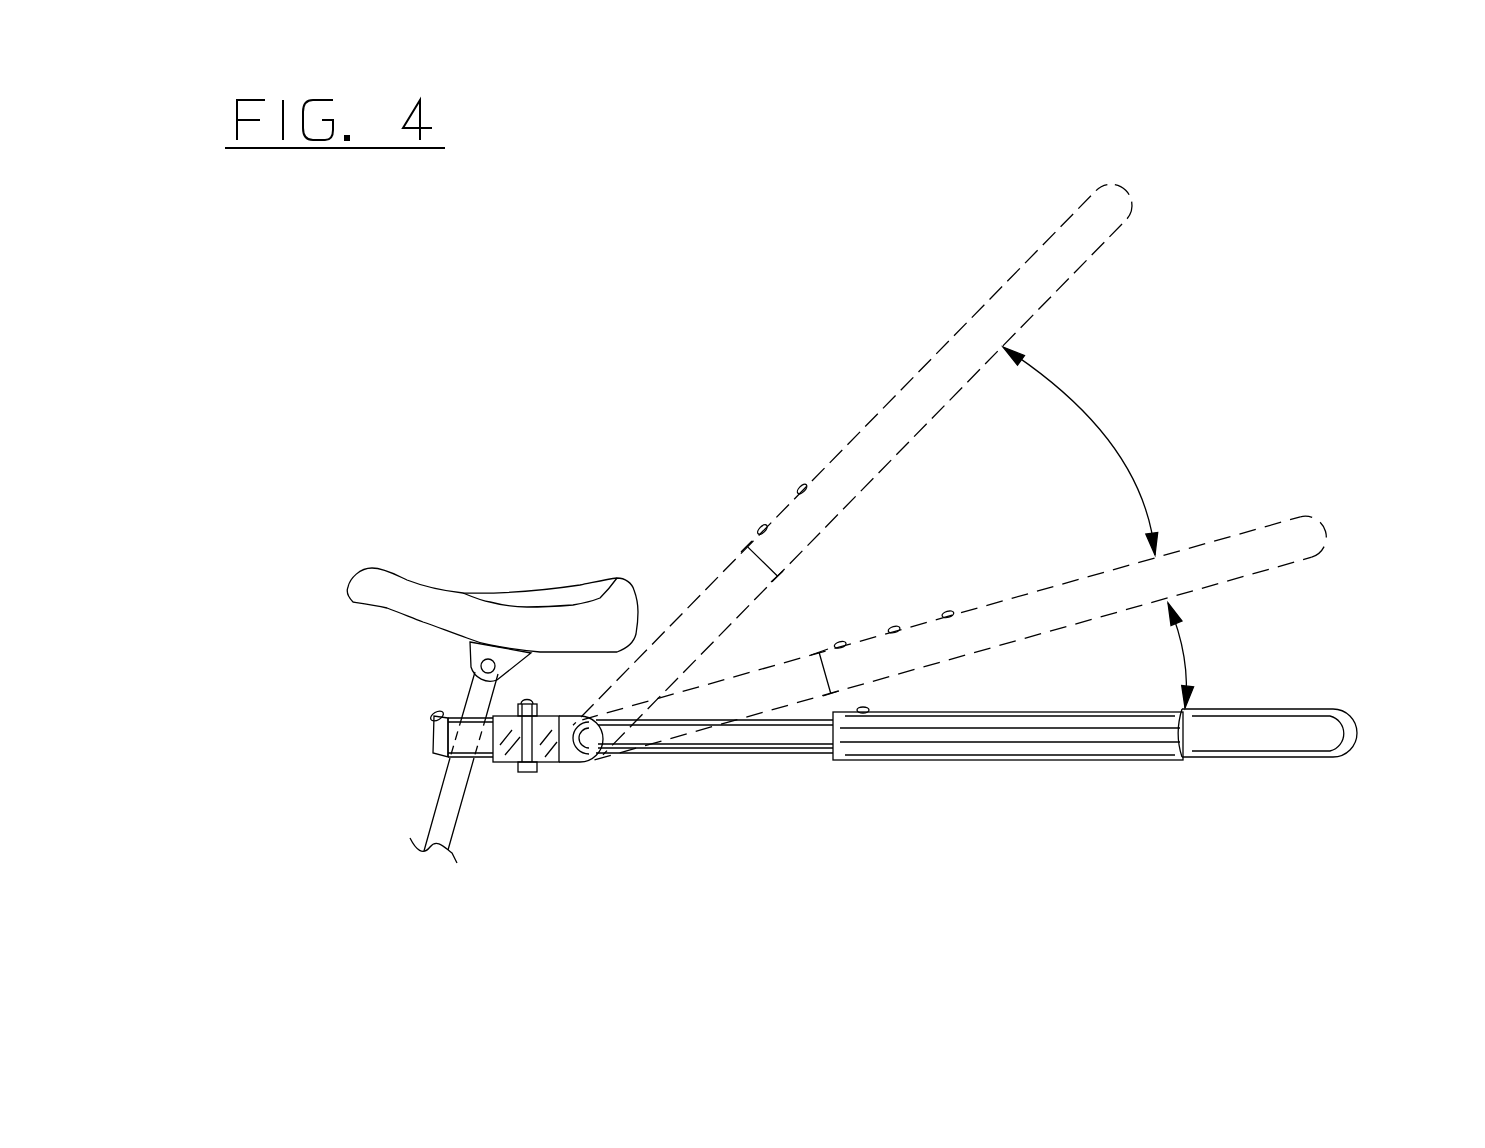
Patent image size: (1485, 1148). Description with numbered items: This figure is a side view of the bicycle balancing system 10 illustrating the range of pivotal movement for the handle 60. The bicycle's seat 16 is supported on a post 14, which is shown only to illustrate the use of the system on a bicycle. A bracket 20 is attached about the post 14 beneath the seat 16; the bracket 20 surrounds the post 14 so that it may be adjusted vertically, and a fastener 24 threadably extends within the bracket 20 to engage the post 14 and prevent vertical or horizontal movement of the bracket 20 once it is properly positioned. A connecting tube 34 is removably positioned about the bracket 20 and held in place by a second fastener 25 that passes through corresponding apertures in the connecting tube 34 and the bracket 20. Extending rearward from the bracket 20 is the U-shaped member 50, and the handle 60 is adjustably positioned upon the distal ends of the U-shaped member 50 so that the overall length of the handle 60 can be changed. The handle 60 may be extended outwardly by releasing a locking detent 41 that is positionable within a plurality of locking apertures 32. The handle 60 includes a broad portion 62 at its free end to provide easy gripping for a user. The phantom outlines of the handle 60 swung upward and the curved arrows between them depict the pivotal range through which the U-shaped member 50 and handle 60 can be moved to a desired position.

The bicycle balancing system 10 is at (1237, 193).
The post 14 is at (433, 832).
The seat 16 is at (411, 590).
The bracket 20 is at (425, 745).
The fastener 24 is at (440, 715).
The second fastener 25 is at (523, 773).
The locking apertures 32 is at (908, 720).
The connecting tube 34 is at (560, 762).
The locking detent 41 is at (868, 709).
The U-shaped member 50 is at (737, 740).
The handle 60 is at (1113, 733).
The broad portion 62 is at (1304, 730).